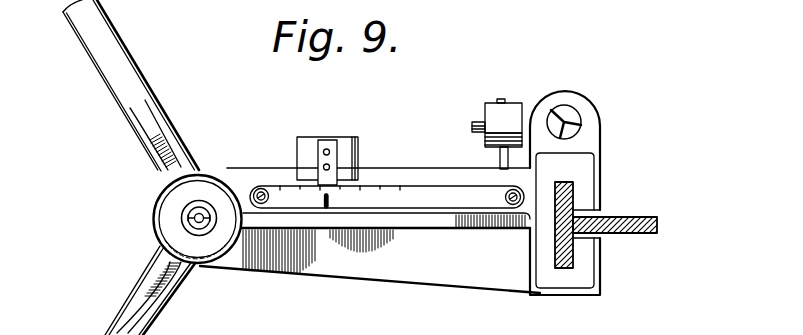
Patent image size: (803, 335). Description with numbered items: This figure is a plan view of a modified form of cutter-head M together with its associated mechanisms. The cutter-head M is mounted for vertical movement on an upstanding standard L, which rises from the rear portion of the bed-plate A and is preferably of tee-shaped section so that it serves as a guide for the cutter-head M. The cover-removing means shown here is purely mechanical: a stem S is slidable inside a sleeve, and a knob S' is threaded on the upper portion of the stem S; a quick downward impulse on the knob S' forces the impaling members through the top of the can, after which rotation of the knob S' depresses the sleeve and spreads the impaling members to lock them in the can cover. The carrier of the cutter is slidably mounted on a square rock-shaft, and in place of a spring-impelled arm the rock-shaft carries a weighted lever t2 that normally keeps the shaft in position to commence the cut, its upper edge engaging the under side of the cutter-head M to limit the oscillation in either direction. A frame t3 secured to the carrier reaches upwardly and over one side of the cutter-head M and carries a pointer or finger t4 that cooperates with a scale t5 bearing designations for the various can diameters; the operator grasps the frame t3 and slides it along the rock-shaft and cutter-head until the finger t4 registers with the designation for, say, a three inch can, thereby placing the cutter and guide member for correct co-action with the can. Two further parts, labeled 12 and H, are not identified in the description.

The stem S is at (206, 180).
The knob S' is at (171, 221).
The weighted lever t2 is at (508, 100).
The frame t3 is at (305, 138).
The pointer or finger t4 is at (340, 207).
The scale t5 is at (412, 190).
The standard L is at (640, 218).
The cutter-head M is at (510, 286).
The lower handle spoke 12 is at (165, 290).
The upper handle H is at (131, 85).
The bed-plate A is at (370, 230).